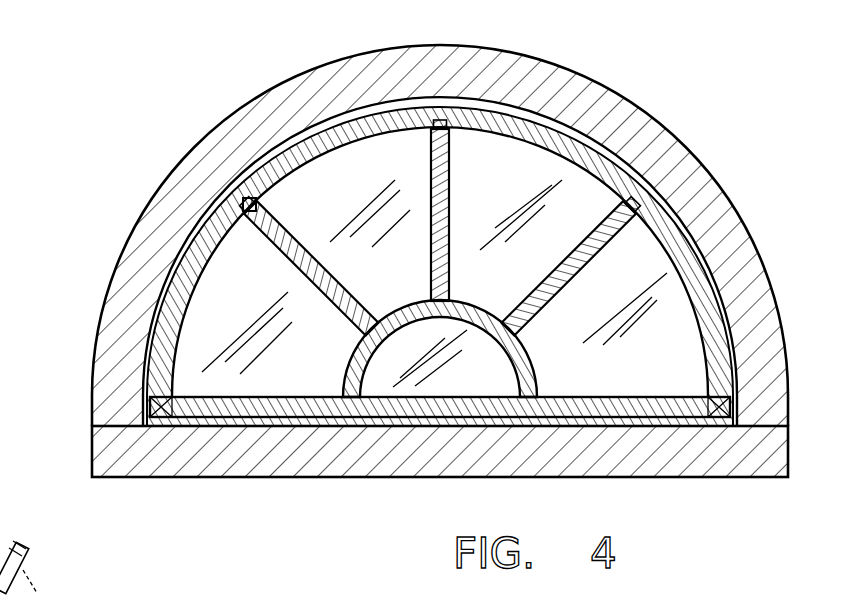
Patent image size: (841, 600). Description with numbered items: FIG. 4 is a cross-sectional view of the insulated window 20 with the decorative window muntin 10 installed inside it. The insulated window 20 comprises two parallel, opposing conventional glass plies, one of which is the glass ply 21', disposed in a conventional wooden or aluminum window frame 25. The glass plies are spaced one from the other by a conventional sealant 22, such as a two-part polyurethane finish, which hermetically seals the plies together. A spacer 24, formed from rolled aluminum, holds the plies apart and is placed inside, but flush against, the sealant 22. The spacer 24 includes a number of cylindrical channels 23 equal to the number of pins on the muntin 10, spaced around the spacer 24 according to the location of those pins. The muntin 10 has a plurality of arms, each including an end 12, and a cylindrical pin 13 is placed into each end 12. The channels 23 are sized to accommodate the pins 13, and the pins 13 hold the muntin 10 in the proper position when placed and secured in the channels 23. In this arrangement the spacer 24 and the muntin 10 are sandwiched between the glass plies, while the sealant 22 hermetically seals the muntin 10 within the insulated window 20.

The insulated window 20 is at (752, 132).
The glass ply 21' is at (434, 279).
The sealant 22 is at (240, 205).
The cylindrical channel 23 is at (268, 212).
The spacer 24 is at (162, 305).
The window frame 25 is at (262, 115).
The window muntin 10 is at (730, 599).
The end 12 is at (18, 534).
The cylindrical pin 13 is at (20, 549).